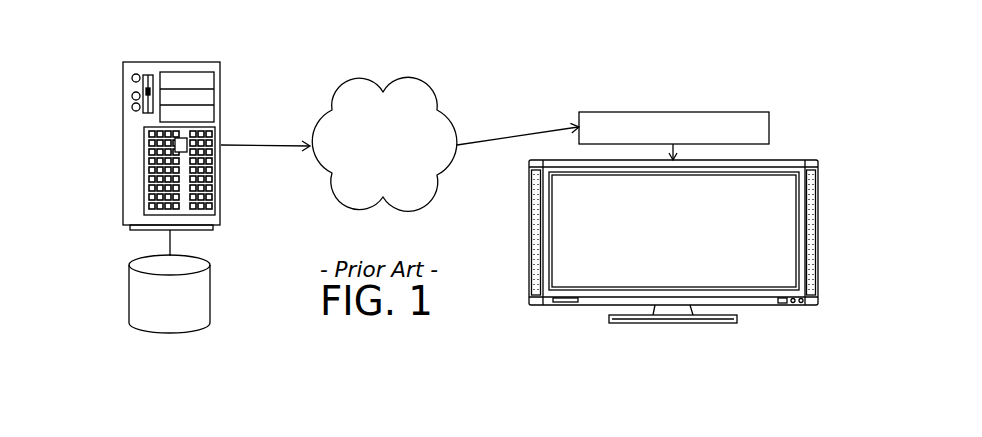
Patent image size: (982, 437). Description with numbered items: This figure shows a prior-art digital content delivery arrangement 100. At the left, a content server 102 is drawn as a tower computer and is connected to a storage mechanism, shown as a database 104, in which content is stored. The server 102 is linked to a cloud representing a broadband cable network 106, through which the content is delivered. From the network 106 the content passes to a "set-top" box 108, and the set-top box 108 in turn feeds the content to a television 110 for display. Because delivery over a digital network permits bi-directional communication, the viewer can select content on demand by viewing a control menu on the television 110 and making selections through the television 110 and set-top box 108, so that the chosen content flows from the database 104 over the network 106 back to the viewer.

The arrangement 100 is at (757, 92).
The server computer 102 is at (122, 145).
The database 104 is at (152, 313).
The broadband cable network 106 is at (369, 180).
The set-top box 108 is at (668, 112).
The television 110 is at (658, 240).